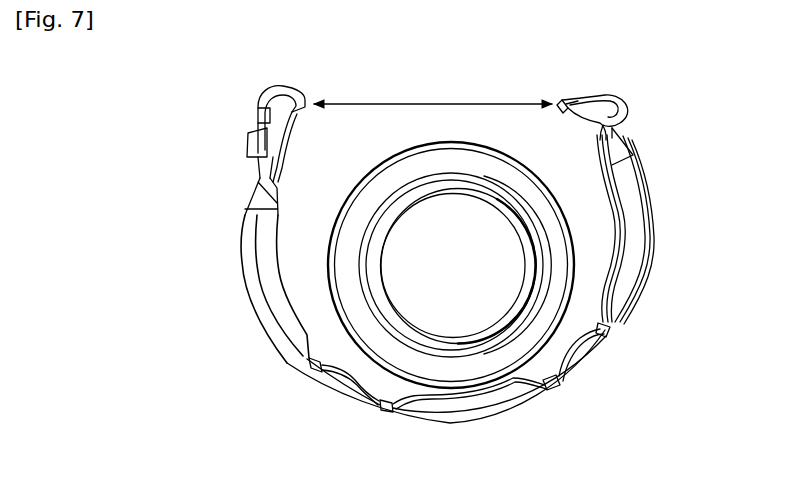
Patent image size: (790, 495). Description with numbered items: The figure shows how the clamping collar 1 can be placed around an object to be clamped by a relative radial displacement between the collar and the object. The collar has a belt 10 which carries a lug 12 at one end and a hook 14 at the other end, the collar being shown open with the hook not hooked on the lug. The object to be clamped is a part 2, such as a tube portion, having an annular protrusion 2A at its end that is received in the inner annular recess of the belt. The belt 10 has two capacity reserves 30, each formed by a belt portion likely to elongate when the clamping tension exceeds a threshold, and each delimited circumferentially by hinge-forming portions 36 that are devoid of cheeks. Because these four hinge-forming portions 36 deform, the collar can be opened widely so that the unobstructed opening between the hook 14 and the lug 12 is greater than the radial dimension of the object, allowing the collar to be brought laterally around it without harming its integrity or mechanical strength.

The clamping collar 1 is at (206, 352).
The part of an object to be clamped 2 is at (437, 190).
The annular protrusion 2A is at (400, 172).
The belt 10 is at (282, 337).
The lug 12 is at (645, 86).
The hook 14 is at (230, 104).
The capacity reserve 30 is at (343, 400).
The hinge-forming portion 36 is at (382, 410).